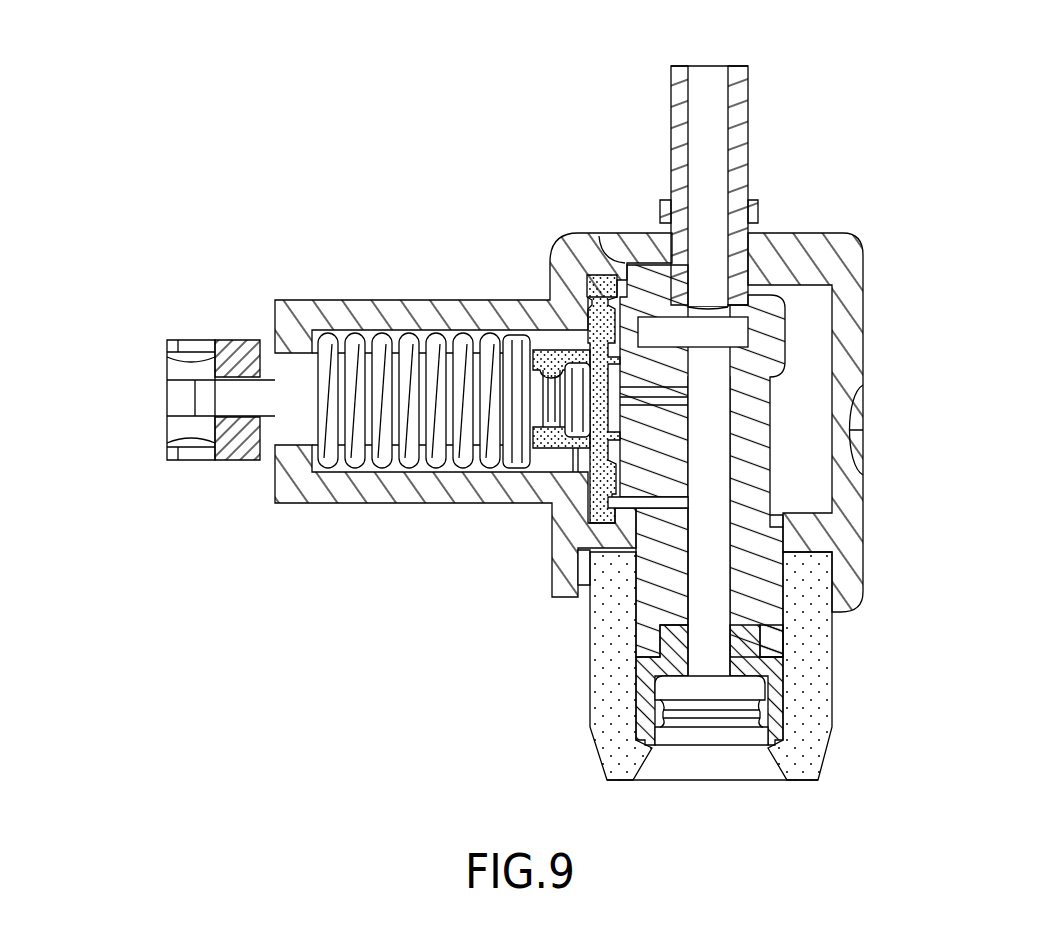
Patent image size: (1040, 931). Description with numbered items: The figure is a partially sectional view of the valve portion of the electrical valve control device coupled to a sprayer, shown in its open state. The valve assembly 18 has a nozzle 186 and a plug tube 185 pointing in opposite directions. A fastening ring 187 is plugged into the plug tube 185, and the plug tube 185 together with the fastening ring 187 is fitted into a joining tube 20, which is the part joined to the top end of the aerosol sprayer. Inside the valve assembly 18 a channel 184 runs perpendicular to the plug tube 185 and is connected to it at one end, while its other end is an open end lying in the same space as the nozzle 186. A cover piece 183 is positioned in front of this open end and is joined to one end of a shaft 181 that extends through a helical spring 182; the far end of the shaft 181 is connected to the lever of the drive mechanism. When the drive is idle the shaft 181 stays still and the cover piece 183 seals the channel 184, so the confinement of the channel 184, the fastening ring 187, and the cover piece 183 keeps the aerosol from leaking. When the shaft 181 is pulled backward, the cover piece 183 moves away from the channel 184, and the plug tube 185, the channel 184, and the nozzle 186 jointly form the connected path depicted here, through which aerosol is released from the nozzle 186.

The valve assembly 18 is at (593, 253).
The shaft 181 is at (300, 415).
The helical spring 182 is at (452, 332).
The cover piece 183 is at (600, 468).
The channel 184 is at (650, 398).
The plug tube 185 is at (748, 572).
The nozzle 186 is at (740, 157).
The fastening ring 187 is at (778, 684).
The joining tube 20 is at (612, 660).